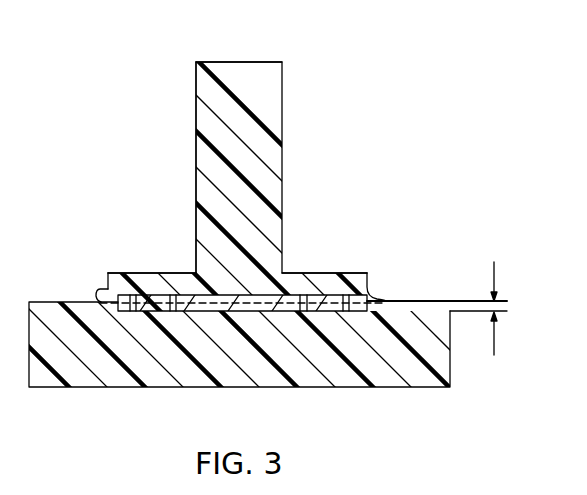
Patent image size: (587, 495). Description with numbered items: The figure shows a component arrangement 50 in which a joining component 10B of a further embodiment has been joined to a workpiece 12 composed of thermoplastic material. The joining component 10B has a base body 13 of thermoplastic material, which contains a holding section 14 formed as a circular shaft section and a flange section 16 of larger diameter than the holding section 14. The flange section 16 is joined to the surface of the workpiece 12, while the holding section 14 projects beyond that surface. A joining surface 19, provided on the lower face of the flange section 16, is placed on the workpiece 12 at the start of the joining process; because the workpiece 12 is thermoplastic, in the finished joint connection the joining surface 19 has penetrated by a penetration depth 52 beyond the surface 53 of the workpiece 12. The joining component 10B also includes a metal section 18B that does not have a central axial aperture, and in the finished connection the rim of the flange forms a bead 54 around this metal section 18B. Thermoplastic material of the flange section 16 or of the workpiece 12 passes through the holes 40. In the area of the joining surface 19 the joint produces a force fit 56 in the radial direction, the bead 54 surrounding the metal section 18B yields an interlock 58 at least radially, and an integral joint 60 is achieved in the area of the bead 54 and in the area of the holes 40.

The joining component 10B is at (288, 112).
The workpiece 12 is at (442, 366).
The base body 13 is at (195, 118).
The holding section 14 is at (241, 70).
The flange section 16 is at (165, 272).
The metal section 18B is at (207, 290).
The joining surface 19 is at (187, 316).
The holes 40 is at (303, 292).
The component arrangement 50 is at (442, 111).
The penetration depth 52 is at (507, 308).
The surface 53 is at (407, 295).
The bead 54 is at (99, 297).
The force fit 56 is at (241, 314).
The interlock 58 is at (109, 271).
The integral joint 60 is at (138, 312).